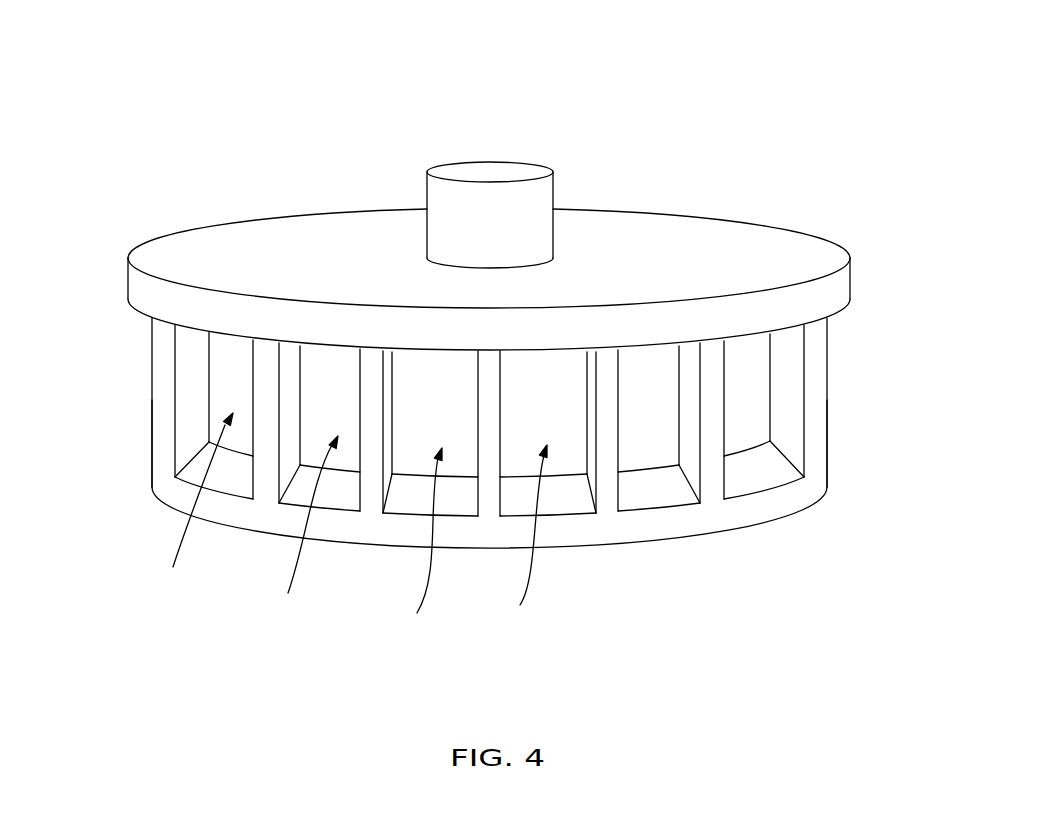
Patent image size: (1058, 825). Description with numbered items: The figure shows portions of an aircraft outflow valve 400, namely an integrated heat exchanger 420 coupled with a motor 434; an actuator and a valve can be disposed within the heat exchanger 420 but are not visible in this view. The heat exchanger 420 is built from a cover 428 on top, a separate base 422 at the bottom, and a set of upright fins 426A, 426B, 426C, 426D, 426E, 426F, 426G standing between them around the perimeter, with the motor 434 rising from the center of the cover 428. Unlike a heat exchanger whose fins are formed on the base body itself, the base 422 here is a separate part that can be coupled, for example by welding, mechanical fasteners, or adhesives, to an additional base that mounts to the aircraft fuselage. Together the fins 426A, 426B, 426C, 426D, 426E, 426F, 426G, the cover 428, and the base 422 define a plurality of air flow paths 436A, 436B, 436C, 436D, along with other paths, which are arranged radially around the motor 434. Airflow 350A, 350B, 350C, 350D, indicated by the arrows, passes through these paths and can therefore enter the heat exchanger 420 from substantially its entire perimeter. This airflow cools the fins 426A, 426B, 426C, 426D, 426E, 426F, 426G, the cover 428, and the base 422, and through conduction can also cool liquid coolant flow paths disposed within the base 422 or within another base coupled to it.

The outflow valve 400 is at (258, 46).
The heat exchanger 420 is at (739, 240).
The base 422 is at (822, 518).
The fin 426A is at (152, 378).
The fin 426B is at (290, 372).
The fin 426C is at (387, 397).
The fin 426D is at (503, 397).
The fin 426E is at (618, 483).
The fin 426F is at (724, 472).
The fin 426G is at (828, 367).
The cover 428 is at (213, 222).
The motor 434 is at (521, 170).
The air flow path 436A is at (235, 357).
The air flow path 436B is at (342, 368).
The air flow path 436C is at (410, 455).
The air flow path 436D is at (567, 450).
The airflow 350A is at (190, 506).
The airflow 350B is at (302, 530).
The airflow 350C is at (418, 548).
The airflow 350D is at (522, 542).